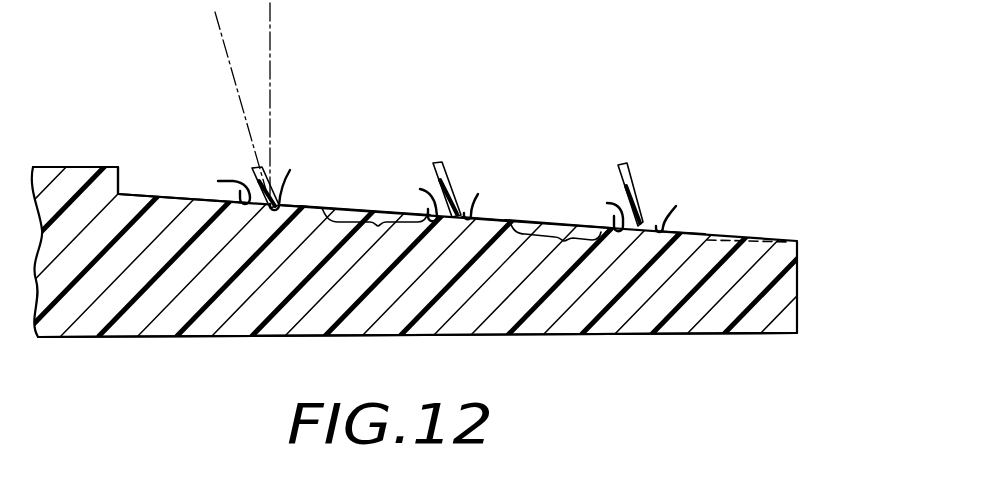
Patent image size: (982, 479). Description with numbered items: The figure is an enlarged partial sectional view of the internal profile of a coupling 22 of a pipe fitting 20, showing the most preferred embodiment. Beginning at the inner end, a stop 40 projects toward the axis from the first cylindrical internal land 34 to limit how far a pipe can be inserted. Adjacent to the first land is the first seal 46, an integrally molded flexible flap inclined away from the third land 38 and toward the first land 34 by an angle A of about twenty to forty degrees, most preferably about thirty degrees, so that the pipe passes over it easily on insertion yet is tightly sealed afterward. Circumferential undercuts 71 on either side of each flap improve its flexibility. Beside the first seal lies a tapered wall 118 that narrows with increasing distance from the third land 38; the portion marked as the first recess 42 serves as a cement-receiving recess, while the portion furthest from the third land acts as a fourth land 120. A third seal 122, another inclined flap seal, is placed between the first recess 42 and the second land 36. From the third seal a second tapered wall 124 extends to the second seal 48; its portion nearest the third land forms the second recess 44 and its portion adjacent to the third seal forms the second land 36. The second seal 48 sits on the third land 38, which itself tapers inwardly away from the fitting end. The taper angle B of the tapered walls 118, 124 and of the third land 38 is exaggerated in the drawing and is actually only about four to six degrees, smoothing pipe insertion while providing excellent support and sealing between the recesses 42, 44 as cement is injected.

The fitting 20 is at (800, 291).
The coupling 22 is at (159, 337).
The stop 40 is at (121, 170).
The first cylindrical internal land 34 is at (157, 196).
The first circumferential seal 46 is at (250, 170).
The circumferential undercuts 71 is at (437, 189).
The fourth land 120 is at (296, 206).
The tapered wall 118 is at (367, 210).
The first recess 42 is at (375, 236).
The third seal 122 is at (438, 164).
The second cylindrical internal land 36 is at (491, 218).
The tapered wall 124 is at (517, 220).
The second recess 44 is at (555, 250).
The second circumferential seal 48 is at (625, 165).
The third cylindrical internal land 38 is at (669, 230).
The angle of tapering B is at (706, 237).
The angle of inclination A is at (310, 18).